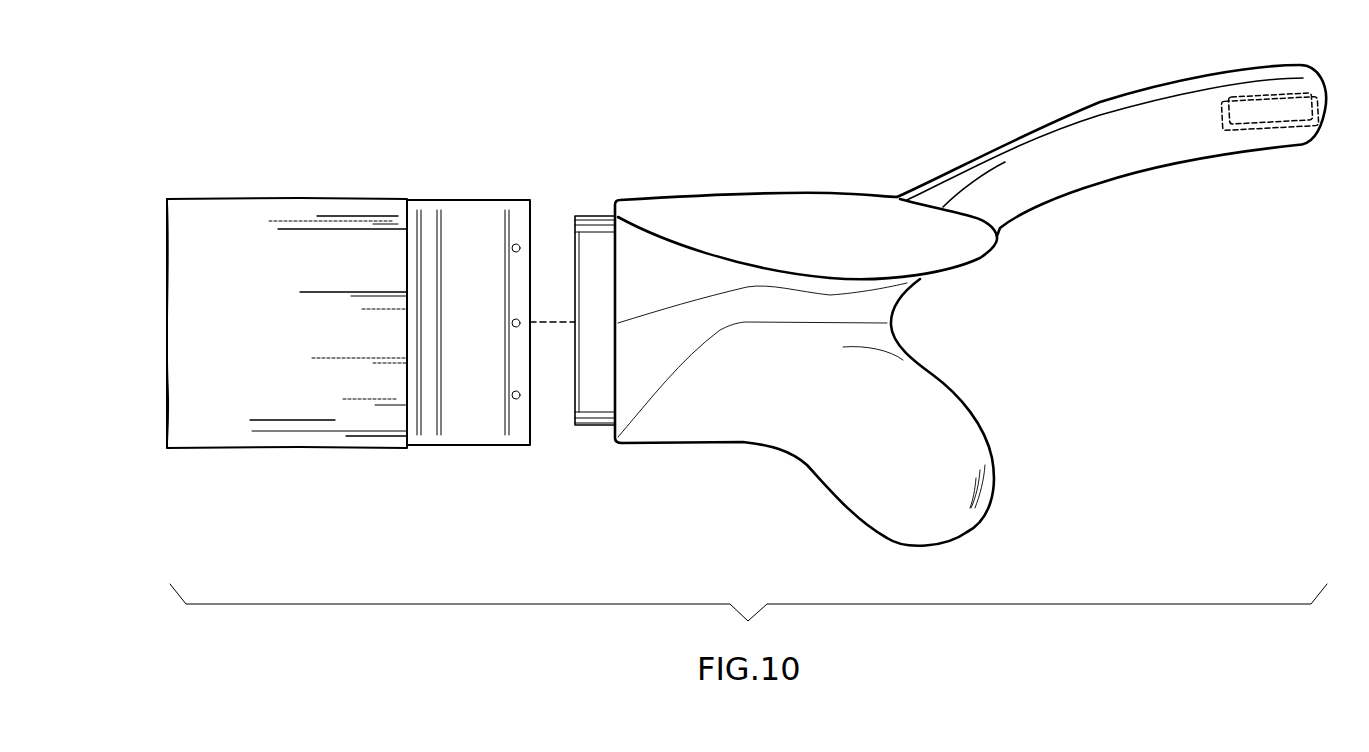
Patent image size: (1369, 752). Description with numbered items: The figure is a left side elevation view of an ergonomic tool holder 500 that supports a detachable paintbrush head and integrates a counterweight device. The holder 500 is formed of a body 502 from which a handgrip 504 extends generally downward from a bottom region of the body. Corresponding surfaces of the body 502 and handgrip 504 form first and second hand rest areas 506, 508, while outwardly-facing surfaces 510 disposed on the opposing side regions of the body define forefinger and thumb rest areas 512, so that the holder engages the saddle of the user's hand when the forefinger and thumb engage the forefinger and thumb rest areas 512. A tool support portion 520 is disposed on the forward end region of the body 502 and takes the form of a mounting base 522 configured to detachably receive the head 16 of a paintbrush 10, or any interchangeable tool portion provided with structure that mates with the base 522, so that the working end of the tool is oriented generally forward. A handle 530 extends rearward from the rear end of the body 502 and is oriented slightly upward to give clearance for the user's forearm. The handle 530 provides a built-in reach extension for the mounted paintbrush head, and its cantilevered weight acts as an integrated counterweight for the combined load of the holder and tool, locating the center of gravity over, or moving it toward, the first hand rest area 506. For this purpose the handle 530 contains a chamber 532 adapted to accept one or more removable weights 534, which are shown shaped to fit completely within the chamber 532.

The paintbrush 10 is at (348, 295).
The head 16 is at (422, 198).
The ergonomic tool holder 500 is at (928, 286).
The body 502 is at (784, 181).
The handgrip 504 is at (783, 467).
The first hand rest area 506 is at (955, 273).
The second hand rest area 508 is at (930, 377).
The outwardly-facing surfaces 510 is at (750, 312).
The forefinger and thumb rest areas 512 is at (848, 318).
The tool support portion 520 is at (619, 161).
The mounting base 522 is at (575, 242).
The handle 530 is at (1075, 113).
The chamber 532 is at (1270, 127).
The removable weights 534 is at (1282, 92).